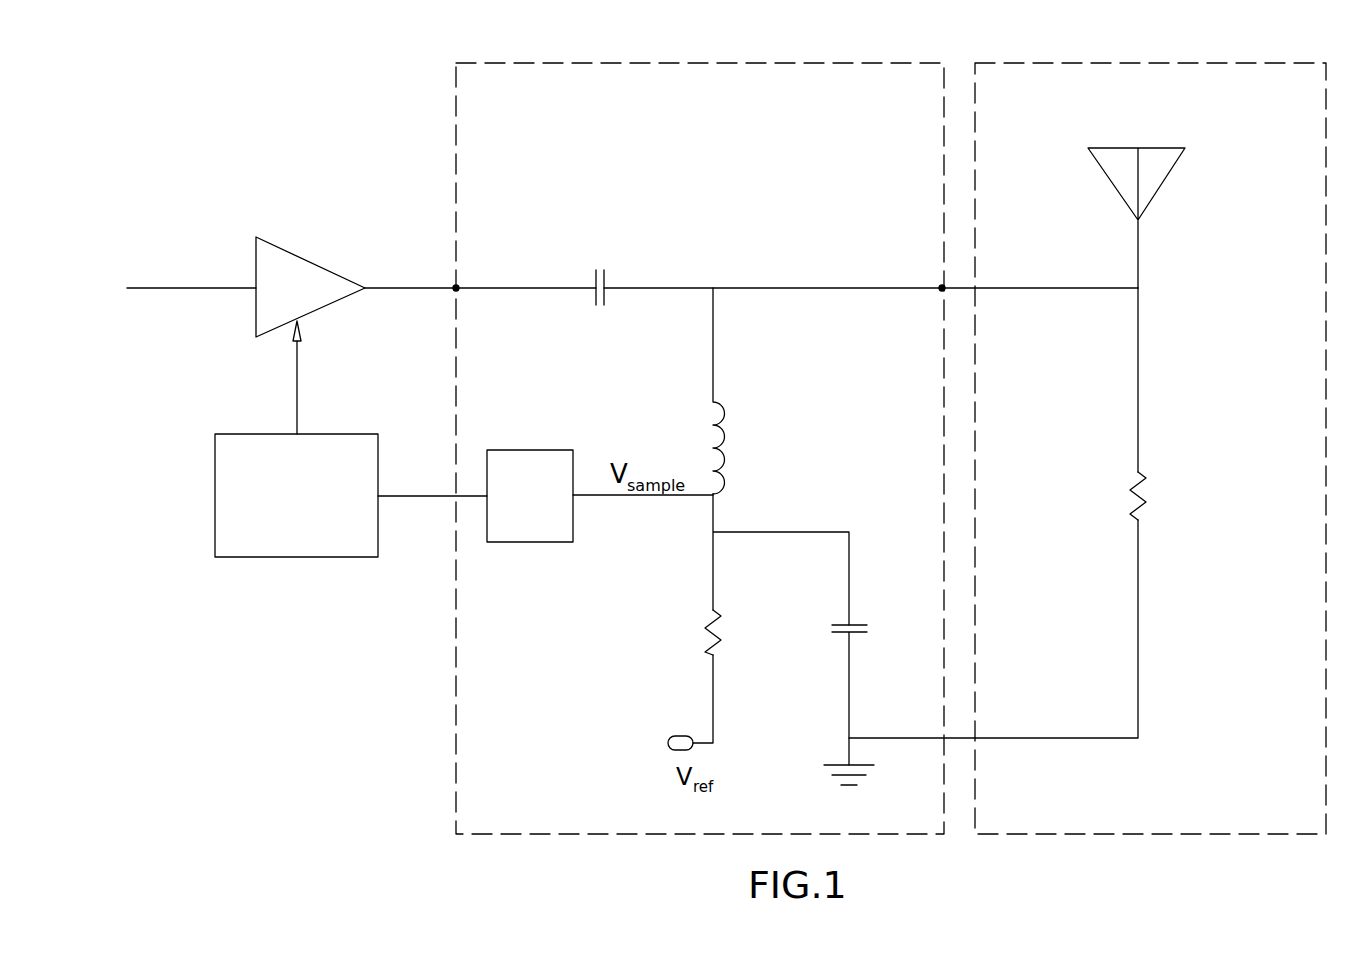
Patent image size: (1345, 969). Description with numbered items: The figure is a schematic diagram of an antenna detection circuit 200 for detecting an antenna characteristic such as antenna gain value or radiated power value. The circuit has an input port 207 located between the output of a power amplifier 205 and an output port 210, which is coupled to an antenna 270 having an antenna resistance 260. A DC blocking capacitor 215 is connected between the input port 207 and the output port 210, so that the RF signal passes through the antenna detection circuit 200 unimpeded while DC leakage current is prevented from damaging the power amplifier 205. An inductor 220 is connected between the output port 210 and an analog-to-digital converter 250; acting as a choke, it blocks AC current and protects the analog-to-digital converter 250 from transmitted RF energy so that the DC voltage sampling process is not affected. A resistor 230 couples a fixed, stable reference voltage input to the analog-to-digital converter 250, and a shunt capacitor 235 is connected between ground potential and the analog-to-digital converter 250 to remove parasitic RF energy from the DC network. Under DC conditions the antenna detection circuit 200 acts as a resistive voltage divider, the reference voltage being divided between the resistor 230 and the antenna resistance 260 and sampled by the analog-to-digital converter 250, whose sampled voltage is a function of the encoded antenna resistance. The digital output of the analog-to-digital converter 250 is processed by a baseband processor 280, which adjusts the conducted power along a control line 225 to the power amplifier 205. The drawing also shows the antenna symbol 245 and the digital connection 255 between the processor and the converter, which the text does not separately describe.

The antenna detection circuit 200 is at (845, 63).
The power amplifier 205 is at (307, 258).
The input port 207 is at (456, 288).
The output port 210 is at (942, 288).
The DC blocking capacitor 215 is at (605, 278).
The inductor 220 is at (743, 435).
The control line 225 is at (298, 358).
The resistor 230 is at (722, 625).
The shunt capacitor 235 is at (857, 623).
The antenna 245 is at (1173, 175).
The analog-to-digital converter 250 is at (537, 450).
The digital output signal 255 is at (408, 495).
The antenna resistance 260 is at (1148, 488).
The antenna 270 is at (1215, 63).
The baseband processor 280 is at (287, 557).